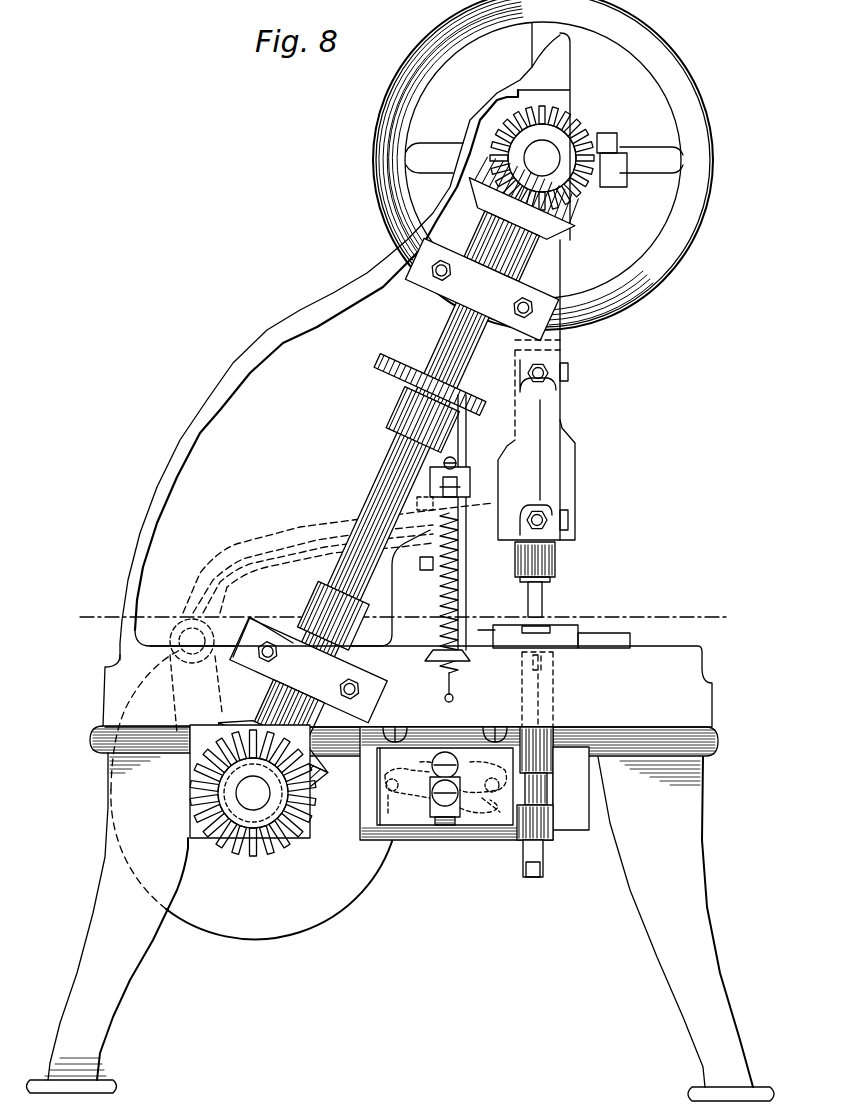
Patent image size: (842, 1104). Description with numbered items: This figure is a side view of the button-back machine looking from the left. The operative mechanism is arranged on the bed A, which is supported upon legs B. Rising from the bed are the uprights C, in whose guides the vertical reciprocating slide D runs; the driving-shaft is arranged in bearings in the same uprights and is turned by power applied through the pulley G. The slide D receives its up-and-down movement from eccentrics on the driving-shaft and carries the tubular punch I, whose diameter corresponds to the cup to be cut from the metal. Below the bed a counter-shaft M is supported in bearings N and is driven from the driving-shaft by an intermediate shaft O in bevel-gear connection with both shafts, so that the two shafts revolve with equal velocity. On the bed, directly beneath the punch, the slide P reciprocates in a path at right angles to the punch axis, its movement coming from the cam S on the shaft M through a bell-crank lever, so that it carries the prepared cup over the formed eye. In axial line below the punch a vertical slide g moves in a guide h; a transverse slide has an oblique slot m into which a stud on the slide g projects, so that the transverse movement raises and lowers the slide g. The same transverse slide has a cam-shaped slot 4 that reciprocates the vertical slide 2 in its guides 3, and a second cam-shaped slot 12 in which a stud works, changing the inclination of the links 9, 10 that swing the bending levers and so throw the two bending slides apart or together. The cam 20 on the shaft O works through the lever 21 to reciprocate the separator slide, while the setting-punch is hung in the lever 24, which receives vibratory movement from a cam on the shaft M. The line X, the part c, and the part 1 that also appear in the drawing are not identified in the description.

The pulley G is at (543, 270).
The uprights C is at (317, 396).
The intermediate shaft O is at (398, 475).
The cam 20 is at (435, 372).
The lever 24 is at (338, 558).
The lever 21 is at (470, 513).
The vertical reciprocating slide D is at (578, 470).
The tubular punch I is at (544, 592).
The section line X is at (399, 621).
The slide P is at (554, 633).
The bed A is at (408, 686).
The legs B is at (401, 913).
The counter-shaft M is at (253, 793).
The bearings N is at (259, 781).
The cam S is at (252, 778).
The guides 3 is at (456, 783).
The cam-shaped slot 4 is at (483, 777).
The link 9 is at (455, 788).
The link 10 is at (412, 780).
The cam-shaped slot 12 is at (479, 810).
The vertical slide 2 is at (491, 811).
The rod 1 is at (389, 807).
The guide h is at (536, 750).
The guide block c is at (571, 788).
The oblique slot m is at (547, 790).
The vertical slide g is at (543, 855).